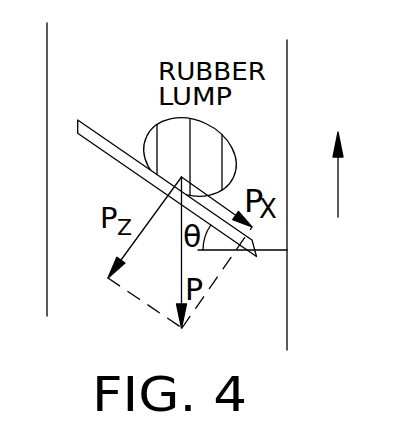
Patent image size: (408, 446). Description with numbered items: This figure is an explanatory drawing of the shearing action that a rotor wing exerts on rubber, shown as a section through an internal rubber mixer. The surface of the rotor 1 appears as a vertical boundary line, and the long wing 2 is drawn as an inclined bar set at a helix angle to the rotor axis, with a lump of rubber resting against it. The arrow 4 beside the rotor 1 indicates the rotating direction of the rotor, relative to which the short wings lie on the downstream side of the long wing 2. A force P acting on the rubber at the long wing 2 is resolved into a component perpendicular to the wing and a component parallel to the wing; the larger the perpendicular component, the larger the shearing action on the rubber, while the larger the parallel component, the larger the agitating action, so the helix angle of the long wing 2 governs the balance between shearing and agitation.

The rotor 1 is at (270, 90).
The long wing 2 is at (103, 137).
The arrow 4 is at (338, 173).